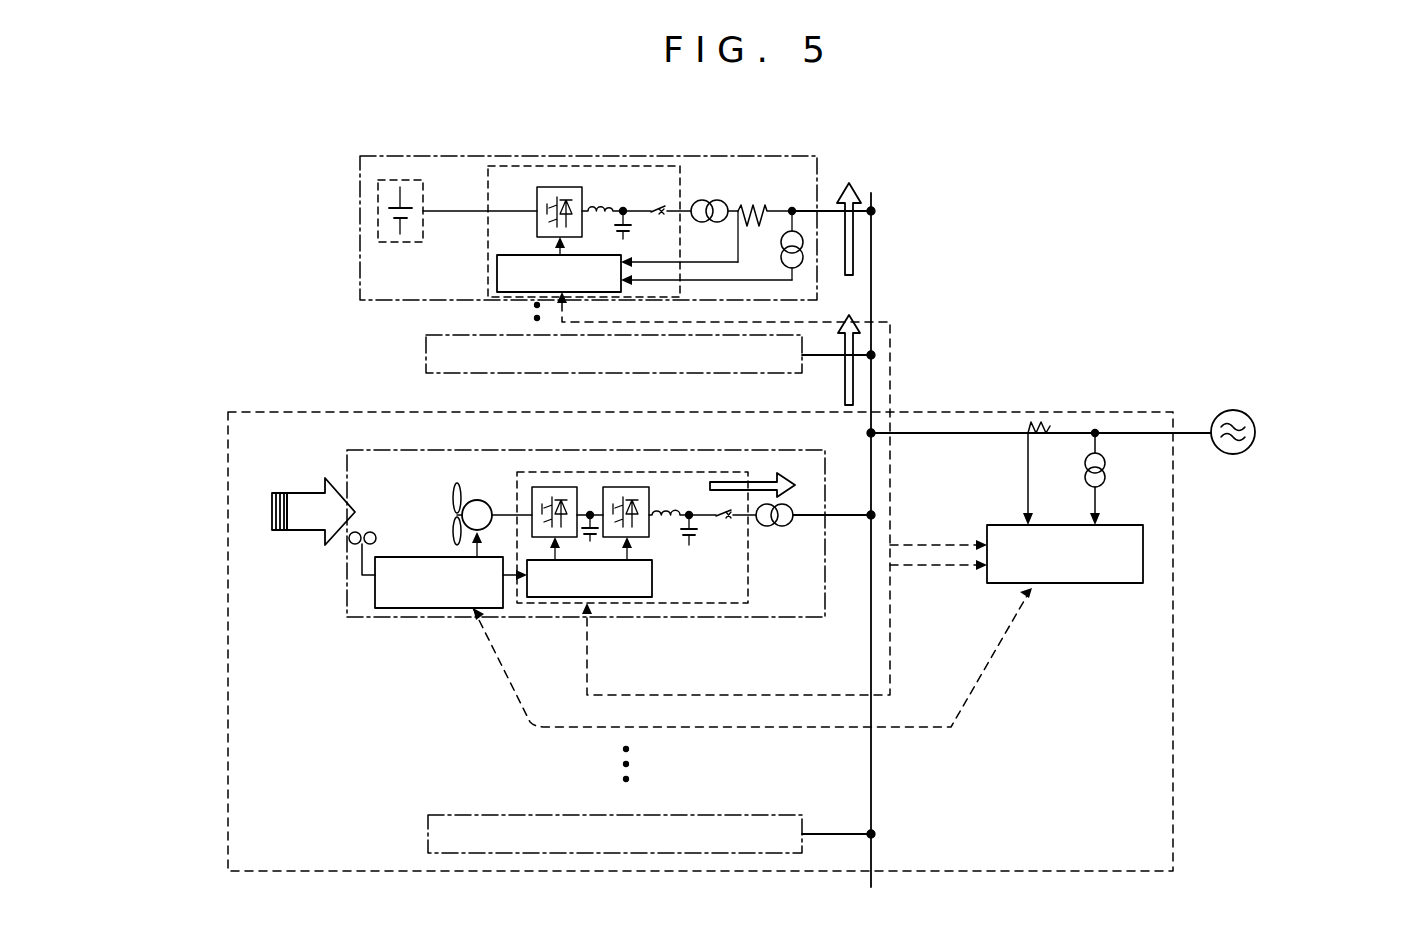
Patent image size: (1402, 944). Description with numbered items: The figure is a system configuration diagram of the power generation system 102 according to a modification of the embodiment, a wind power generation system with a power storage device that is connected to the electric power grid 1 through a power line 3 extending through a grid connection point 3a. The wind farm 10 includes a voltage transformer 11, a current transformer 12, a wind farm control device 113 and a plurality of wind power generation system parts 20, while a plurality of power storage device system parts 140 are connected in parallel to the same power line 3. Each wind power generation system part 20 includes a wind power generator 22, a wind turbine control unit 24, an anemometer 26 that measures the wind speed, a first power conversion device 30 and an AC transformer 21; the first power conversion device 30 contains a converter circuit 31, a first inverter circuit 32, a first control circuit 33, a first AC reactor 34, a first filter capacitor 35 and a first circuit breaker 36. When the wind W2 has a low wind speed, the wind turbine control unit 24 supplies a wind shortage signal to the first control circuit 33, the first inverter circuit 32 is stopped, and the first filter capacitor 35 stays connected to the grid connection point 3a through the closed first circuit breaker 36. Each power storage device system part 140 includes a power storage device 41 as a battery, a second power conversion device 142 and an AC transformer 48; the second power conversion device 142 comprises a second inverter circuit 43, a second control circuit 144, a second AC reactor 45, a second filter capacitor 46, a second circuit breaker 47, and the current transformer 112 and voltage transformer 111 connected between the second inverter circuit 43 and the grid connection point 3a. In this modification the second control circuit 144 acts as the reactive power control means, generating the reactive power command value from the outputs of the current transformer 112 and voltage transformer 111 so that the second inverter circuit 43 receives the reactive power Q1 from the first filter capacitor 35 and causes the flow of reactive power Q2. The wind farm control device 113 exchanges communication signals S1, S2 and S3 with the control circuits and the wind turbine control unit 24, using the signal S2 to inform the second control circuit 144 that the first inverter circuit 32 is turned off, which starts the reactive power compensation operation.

The electric power grid 1 is at (1256, 430).
The power line 3 is at (872, 378).
The grid connection point 3a is at (873, 432).
The wind farm 10 is at (1175, 570).
The voltage transformer 11 is at (1106, 462).
The current transformer 12 is at (1048, 437).
The wind power generation system part 20 is at (397, 618).
The AC transformer 21 is at (780, 527).
The wind power generator 22 is at (477, 500).
The wind turbine control unit 24 is at (438, 608).
The anemometer 26 is at (370, 531).
The first power conversion device 30 is at (700, 605).
The converter circuit 31 is at (556, 487).
The first inverter circuit 32 is at (640, 487).
The first control circuit 33 is at (543, 597).
The first AC reactor 34 is at (665, 505).
The first filter capacitor 35 is at (687, 543).
The first circuit breaker 36 is at (723, 522).
The power storage device 41 is at (402, 178).
The second inverter circuit 43 is at (558, 187).
The second AC reactor 45 is at (603, 207).
The second filter capacitor 46 is at (630, 222).
The second circuit breaker 47 is at (657, 207).
The AC transformer 48 is at (705, 200).
The power generation system 102 is at (1063, 207).
The voltage transformer 111 is at (797, 232).
The current transformer 112 is at (750, 204).
The wind farm control device 113 is at (1103, 585).
The power storage device system part 140 is at (360, 203).
The second power conversion device 142 is at (492, 166).
The second control circuit 144 is at (497, 268).
The reactive power Q1 is at (763, 473).
The reactive power Q2 is at (854, 240).
The communication signal S1 is at (938, 599).
The communication signal S2 is at (782, 499).
The communication signal S3 is at (752, 657).
The wind W2 is at (300, 532).